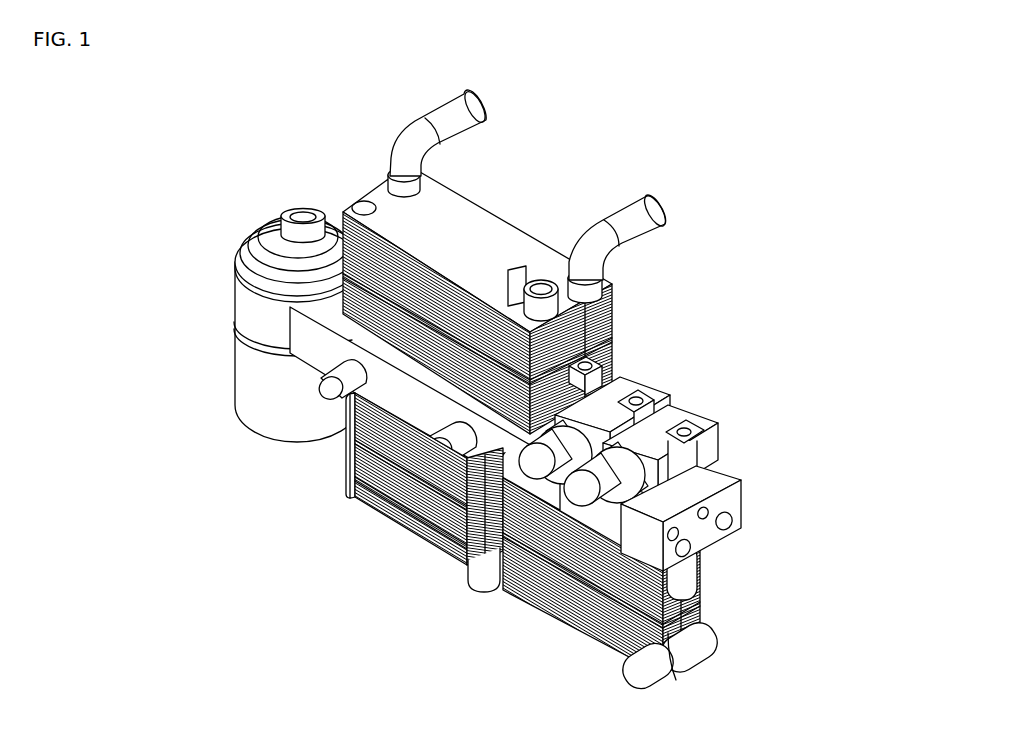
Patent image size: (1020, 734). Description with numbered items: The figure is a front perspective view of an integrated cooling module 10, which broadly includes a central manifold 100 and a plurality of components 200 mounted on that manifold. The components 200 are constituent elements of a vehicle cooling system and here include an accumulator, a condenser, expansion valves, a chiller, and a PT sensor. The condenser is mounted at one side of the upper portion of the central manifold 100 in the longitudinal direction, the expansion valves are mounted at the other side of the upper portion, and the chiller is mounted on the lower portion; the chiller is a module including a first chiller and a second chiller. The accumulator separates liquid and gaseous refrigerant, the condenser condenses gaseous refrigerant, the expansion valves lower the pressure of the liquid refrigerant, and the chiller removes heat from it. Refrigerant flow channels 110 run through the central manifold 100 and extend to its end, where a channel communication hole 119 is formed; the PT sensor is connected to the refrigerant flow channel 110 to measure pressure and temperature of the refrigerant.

The integrated cooling module 10 is at (290, 125).
The component 200 is at (477, 395).
The central manifold 100 is at (341, 484).
The refrigerant flow channel 110 is at (751, 518).
The channel communication hole 119 is at (700, 502).